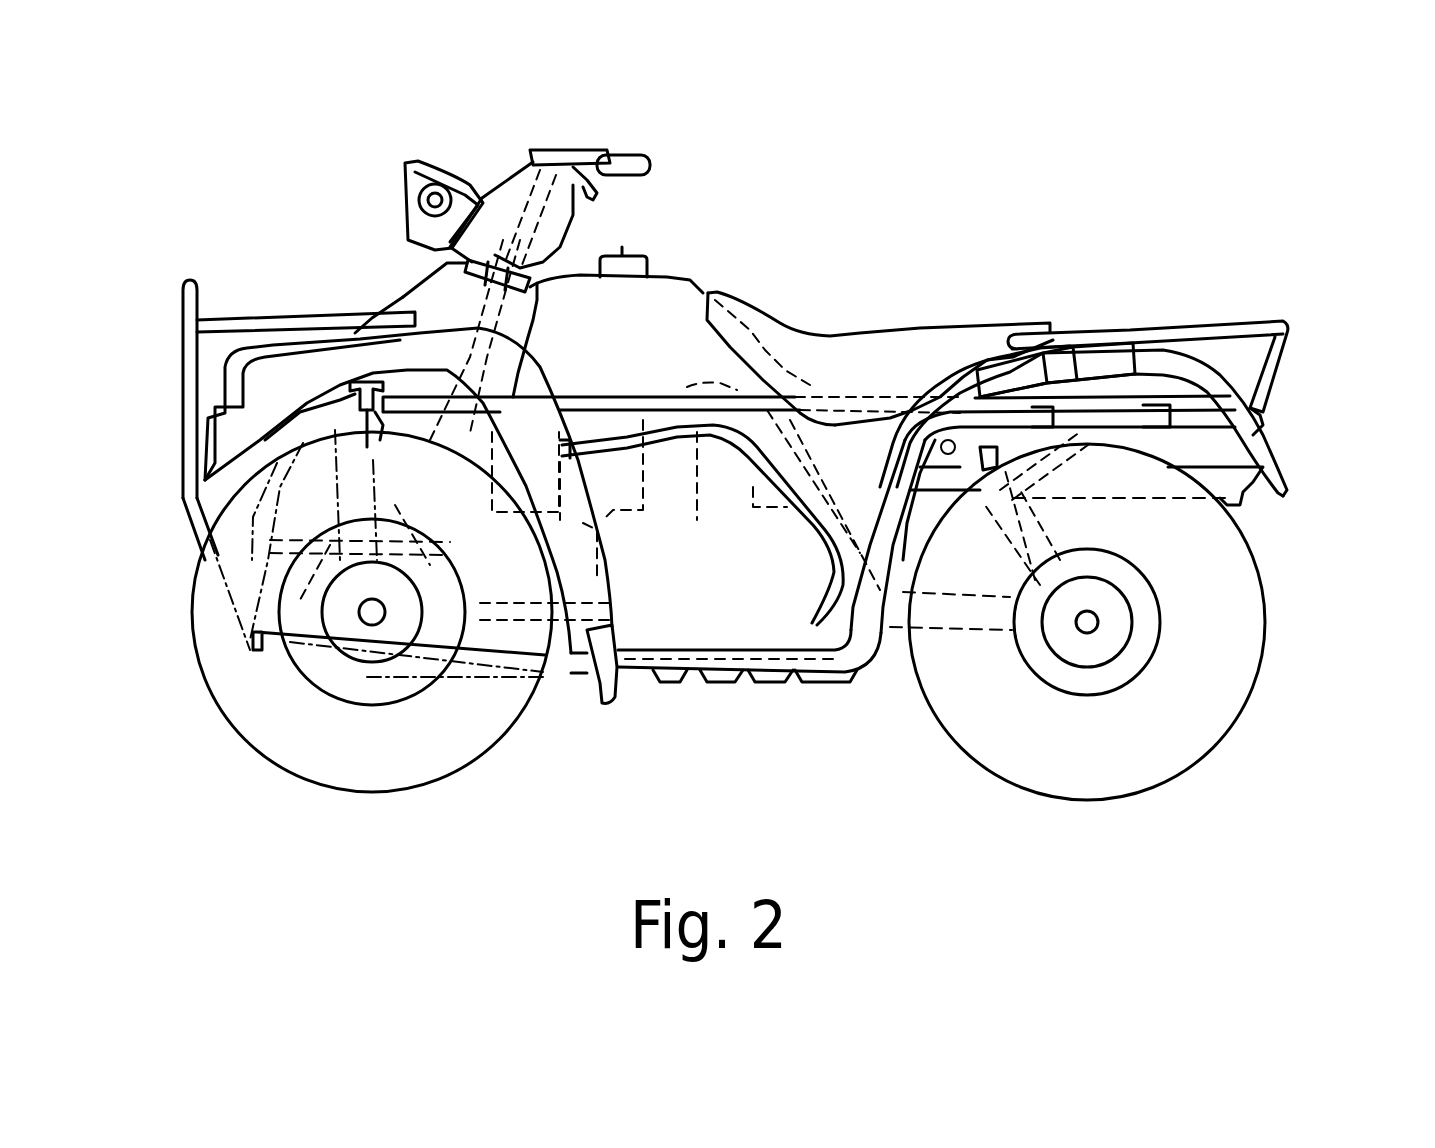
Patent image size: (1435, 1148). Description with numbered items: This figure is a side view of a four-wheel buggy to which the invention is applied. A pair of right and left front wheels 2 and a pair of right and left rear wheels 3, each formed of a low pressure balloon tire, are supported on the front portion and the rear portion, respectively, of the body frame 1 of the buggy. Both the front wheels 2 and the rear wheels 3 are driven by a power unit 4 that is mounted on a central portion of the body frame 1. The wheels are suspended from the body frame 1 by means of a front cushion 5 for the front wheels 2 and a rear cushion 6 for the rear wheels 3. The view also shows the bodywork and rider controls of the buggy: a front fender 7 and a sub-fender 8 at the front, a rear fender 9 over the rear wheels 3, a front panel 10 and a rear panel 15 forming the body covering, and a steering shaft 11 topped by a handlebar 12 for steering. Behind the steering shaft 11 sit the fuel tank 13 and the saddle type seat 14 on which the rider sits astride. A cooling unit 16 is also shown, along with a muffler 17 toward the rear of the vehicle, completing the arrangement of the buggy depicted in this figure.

The body frame 1 is at (576, 690).
The front wheels 2 is at (297, 750).
The rear wheels 3 is at (1050, 767).
The power unit 4 is at (757, 608).
The front cushion 5 is at (360, 490).
The rear cushion 6 is at (1030, 527).
The front fender 7 is at (293, 367).
The sub-fender 8 is at (683, 685).
The rear fender 9 is at (960, 387).
The front panel 10 is at (403, 300).
The steering shaft 11 is at (420, 273).
The handlebar 12 is at (630, 155).
The fuel tank 13 is at (663, 307).
The saddle type seat 14 is at (837, 357).
The rear panel 15 is at (860, 448).
The cooling unit 16 is at (576, 405).
The muffler 17 is at (1233, 477).